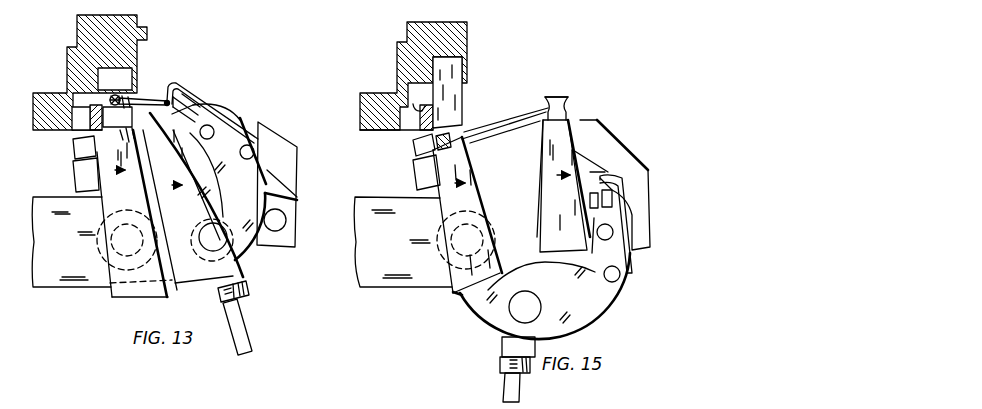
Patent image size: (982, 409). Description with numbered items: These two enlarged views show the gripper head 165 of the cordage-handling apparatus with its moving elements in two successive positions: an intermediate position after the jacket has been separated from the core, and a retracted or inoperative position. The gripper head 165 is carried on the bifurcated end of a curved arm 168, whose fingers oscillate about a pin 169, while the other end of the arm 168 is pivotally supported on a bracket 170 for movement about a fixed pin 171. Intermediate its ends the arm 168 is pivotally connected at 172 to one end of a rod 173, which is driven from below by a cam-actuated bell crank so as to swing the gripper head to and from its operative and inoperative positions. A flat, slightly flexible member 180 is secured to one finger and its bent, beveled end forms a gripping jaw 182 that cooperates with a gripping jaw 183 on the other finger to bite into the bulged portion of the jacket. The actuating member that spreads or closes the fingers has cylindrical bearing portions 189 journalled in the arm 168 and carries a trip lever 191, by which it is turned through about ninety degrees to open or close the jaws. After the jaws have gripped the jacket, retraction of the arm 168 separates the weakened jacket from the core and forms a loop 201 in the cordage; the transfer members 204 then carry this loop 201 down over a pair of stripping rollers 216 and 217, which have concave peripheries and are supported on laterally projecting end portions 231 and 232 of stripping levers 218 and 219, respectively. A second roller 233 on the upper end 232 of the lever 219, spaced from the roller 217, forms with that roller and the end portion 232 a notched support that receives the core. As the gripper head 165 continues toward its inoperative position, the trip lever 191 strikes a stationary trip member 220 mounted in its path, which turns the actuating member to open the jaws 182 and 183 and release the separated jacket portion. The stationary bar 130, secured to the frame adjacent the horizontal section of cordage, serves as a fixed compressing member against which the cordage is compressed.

In FIG. 15, the bar 130 is at (421, 101).
In FIG. 13, the gripper head 165 is at (248, 252).
In FIG. 15, the gripper head 165 is at (618, 306).
In FIG. 13, the curved arm 168 is at (292, 202).
In FIG. 15, the curved arm 168 is at (475, 306).
In FIG. 13, the pin 169 is at (254, 152).
In FIG. 15, the pin 169 is at (620, 278).
In FIG. 13, the bracket 170 is at (49, 288).
In FIG. 15, the bracket 170 is at (360, 282).
In FIG. 13, the fixed pin 171 is at (103, 259).
In FIG. 15, the fixed pin 171 is at (440, 257).
In FIG. 13, the pivotal connection 172 is at (226, 224).
In FIG. 15, the pivotal connection 172 is at (542, 300).
In FIG. 13, the rod 173 is at (241, 331).
In FIG. 15, the rod 173 is at (520, 396).
In FIG. 13, the flat slightly flexible member 180 is at (190, 93).
In FIG. 13, the gripping jaw 182 is at (176, 84).
In FIG. 13, the gripping jaw 183 is at (190, 152).
In FIG. 13, the cylindrical bearing portions 189 is at (217, 130).
In FIG. 13, the trip lever 191 is at (223, 113).
In FIG. 13, the loop 201 is at (162, 101).
In FIG. 15, the loop 201 is at (497, 120).
In FIG. 13, the transfer members 204 is at (135, 80).
In FIG. 15, the transfer members 204 is at (462, 94).
In FIG. 13, the stripping roller 216 is at (127, 91).
In FIG. 15, the stripping roller 216 is at (563, 97).
In FIG. 13, the stripping roller 217 is at (133, 120).
In FIG. 15, the stripping roller 217 is at (462, 126).
In FIG. 13, the stripping lever 218 is at (207, 147).
In FIG. 15, the stripping lever 218 is at (540, 187).
In FIG. 13, the stripping lever 219 is at (153, 294).
In FIG. 15, the stripping lever 219 is at (505, 138).
In FIG. 13, the stationary trip member 220 is at (298, 158).
In FIG. 15, the stationary trip member 220 is at (612, 136).
In FIG. 13, the laterally projecting end portion 231 is at (140, 150).
In FIG. 15, the laterally projecting end portion 231 is at (550, 128).
In FIG. 13, the laterally projecting end portion 232 is at (73, 178).
In FIG. 15, the laterally projecting end portion 232 is at (420, 180).
In FIG. 13, the second roller 233 is at (73, 149).
In FIG. 15, the second roller 233 is at (415, 153).